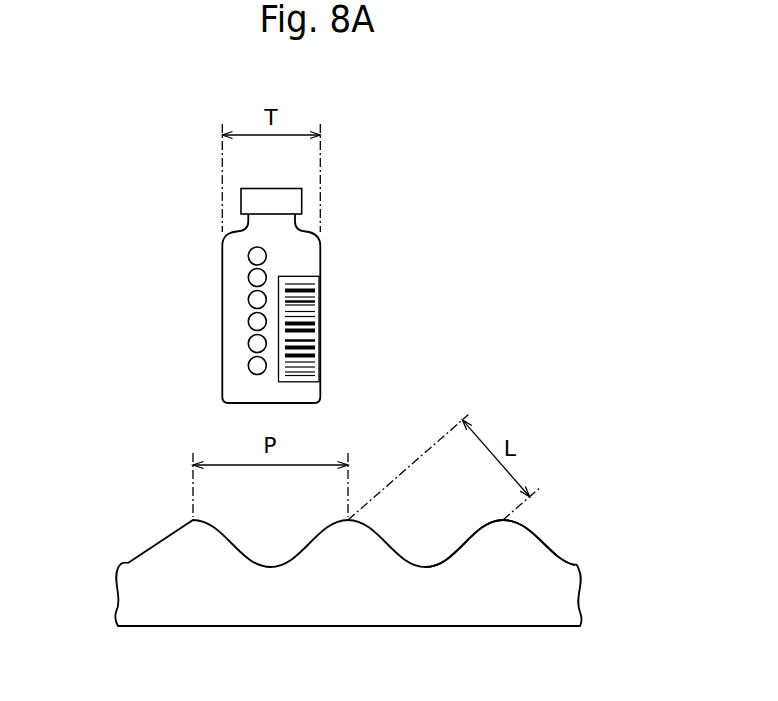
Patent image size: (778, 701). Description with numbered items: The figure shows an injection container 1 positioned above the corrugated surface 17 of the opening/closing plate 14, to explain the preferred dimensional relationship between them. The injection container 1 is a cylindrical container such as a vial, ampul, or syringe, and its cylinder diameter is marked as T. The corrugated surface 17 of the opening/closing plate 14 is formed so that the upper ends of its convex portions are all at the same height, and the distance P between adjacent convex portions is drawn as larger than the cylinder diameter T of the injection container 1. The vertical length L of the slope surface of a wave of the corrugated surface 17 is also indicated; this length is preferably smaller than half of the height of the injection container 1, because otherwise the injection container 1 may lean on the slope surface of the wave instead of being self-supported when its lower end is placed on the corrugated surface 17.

The injection container 1 is at (320, 257).
The opening/closing plate 14 is at (145, 532).
The corrugated surface 17 is at (545, 542).